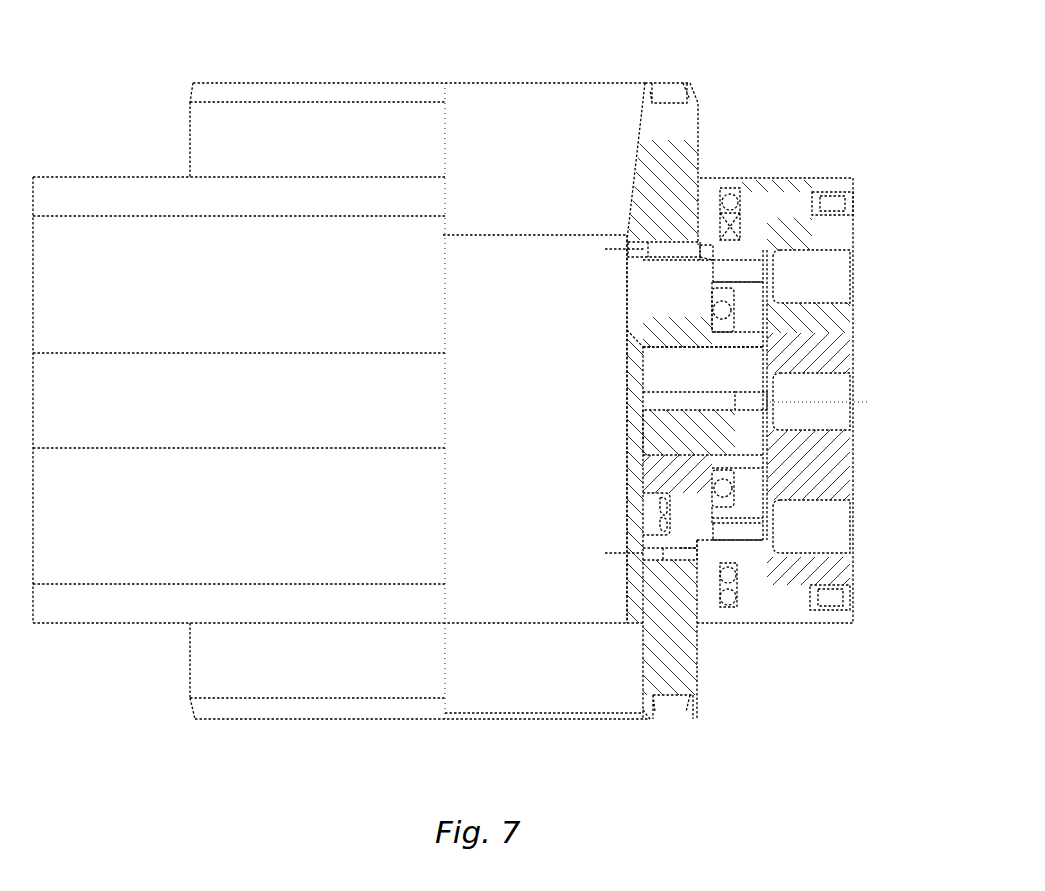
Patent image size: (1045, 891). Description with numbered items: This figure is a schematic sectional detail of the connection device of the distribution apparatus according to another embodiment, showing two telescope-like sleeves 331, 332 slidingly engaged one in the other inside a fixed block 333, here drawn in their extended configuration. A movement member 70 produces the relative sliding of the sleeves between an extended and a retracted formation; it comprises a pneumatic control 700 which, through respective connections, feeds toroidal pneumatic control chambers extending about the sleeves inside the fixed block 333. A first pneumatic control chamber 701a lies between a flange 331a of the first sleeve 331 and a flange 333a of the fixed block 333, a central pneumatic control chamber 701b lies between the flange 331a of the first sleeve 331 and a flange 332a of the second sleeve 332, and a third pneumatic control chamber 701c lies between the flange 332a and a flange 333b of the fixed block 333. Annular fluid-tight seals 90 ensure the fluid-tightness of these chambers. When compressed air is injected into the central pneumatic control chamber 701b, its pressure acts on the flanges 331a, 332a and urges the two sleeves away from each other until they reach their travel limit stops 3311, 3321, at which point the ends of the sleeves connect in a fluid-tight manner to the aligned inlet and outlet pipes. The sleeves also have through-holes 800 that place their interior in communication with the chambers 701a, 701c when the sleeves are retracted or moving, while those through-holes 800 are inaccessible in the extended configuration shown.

The through-holes 800 is at (500, 250).
The first telescope-like sleeve 331 is at (685, 130).
The travel limit stop 3311 is at (703, 262).
The annular fluid-tight seals 90 is at (727, 233).
The fixed block 333 is at (792, 178).
The flange of the fixed block 333a is at (722, 312).
The flange of the fixed block 333b is at (720, 493).
The pneumatic control chamber 701a is at (748, 272).
The flange of the first sleeve 331a is at (742, 290).
The central pneumatic control chamber 701b is at (723, 372).
The movement member 70 is at (854, 389).
The pneumatic control 700 is at (861, 417).
The flange of the second sleeve 332a is at (748, 520).
The third pneumatic control chamber 701c is at (747, 538).
The second telescope-like sleeve 332 is at (687, 660).
The travel limit stop 3321 is at (700, 547).